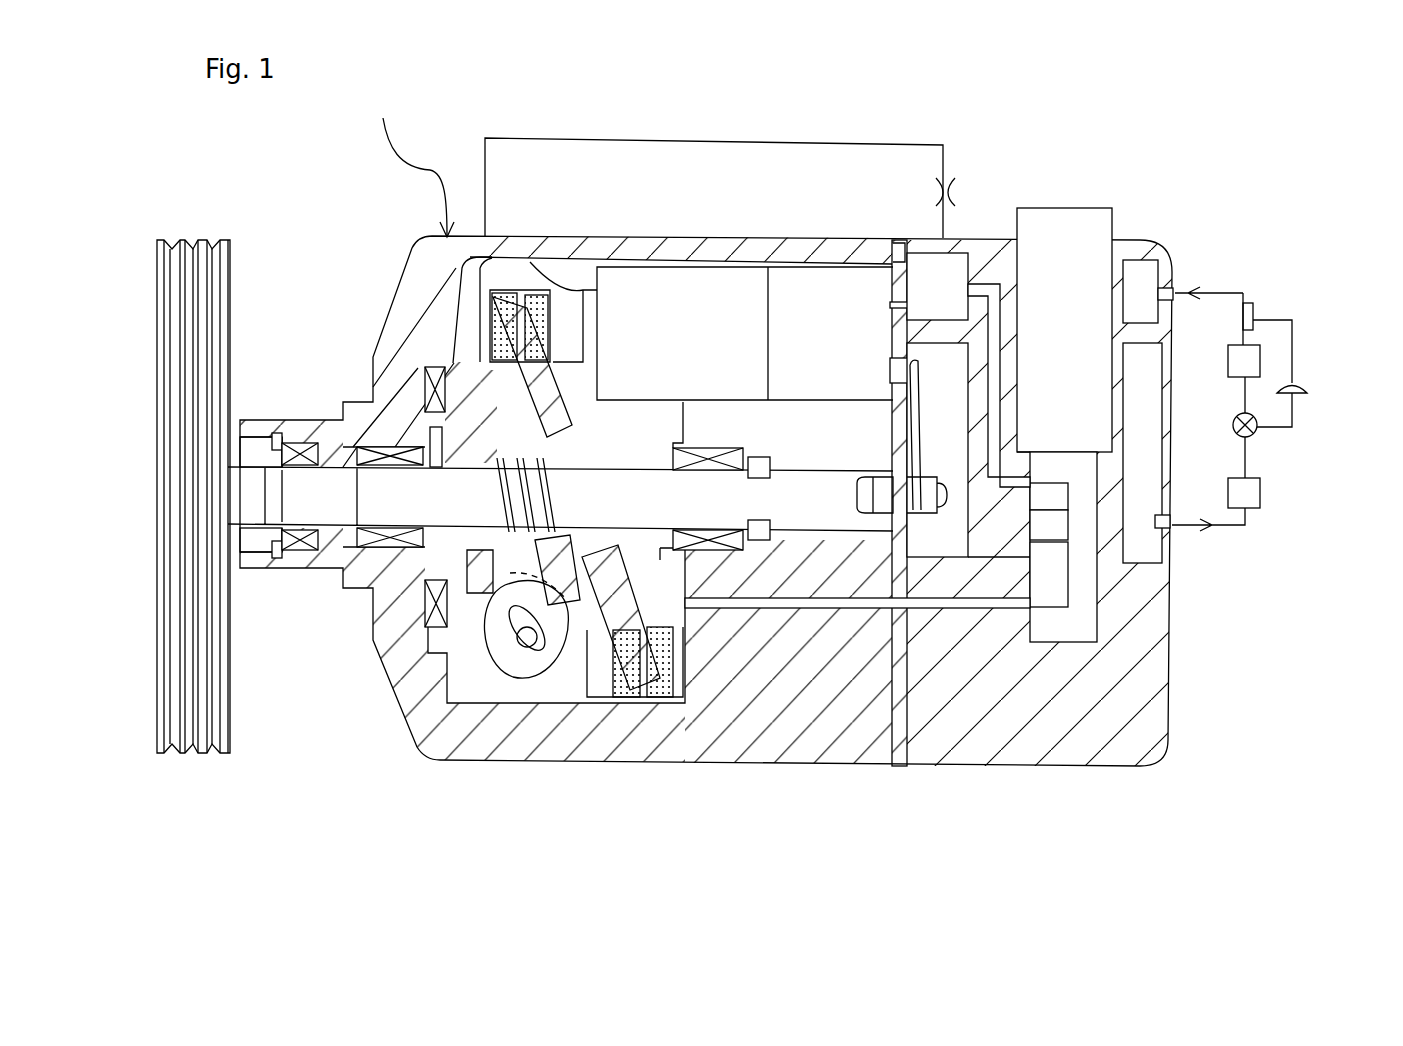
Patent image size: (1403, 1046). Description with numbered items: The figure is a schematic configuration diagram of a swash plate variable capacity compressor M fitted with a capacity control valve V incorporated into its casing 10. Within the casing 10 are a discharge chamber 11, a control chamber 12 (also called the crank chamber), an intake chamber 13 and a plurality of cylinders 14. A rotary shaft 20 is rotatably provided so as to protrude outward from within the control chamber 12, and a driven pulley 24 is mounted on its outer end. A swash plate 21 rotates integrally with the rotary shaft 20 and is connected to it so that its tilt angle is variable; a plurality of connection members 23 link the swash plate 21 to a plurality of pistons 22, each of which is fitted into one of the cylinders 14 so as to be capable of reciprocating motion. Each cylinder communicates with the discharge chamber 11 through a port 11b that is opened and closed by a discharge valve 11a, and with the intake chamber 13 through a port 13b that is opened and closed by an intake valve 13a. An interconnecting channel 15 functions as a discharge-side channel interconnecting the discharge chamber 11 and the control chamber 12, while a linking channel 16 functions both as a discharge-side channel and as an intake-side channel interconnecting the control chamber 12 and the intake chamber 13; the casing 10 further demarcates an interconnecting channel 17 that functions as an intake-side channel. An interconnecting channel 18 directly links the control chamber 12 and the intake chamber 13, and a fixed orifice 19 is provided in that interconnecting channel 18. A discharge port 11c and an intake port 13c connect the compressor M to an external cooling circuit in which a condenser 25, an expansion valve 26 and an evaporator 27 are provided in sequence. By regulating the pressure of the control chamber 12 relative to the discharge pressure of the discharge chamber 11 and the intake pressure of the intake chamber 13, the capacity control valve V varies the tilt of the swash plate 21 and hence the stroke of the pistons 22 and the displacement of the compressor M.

The casing 10 is at (740, 237).
The discharge chamber 11 is at (949, 437).
The discharge valve 11a is at (918, 358).
The port 11b is at (895, 358).
The discharge port 11c is at (1170, 527).
The control chamber 12 is at (575, 702).
The intake chamber 13 is at (965, 301).
The intake valve 13a is at (890, 298).
The port 13b is at (920, 262).
The intake port 13c is at (1175, 292).
The cylinders 14 is at (847, 280).
The interconnecting channel 15 is at (950, 545).
The linking channel 16 is at (968, 607).
The interconnecting channel 17 is at (993, 290).
The interconnecting channel 18 is at (855, 142).
The fixed orifice 19 is at (950, 190).
The rotary shaft 20 is at (395, 492).
The swash plate 21 is at (500, 296).
The pistons 22 is at (680, 330).
The connection members 23 is at (615, 700).
The driven pulley 24 is at (230, 240).
The condenser 25 is at (1262, 503).
The expansion valve 26 is at (1255, 432).
The evaporator 27 is at (1248, 360).
The capacity control valve V is at (1093, 193).
The swash plate variable capacity compressor M is at (410, 159).